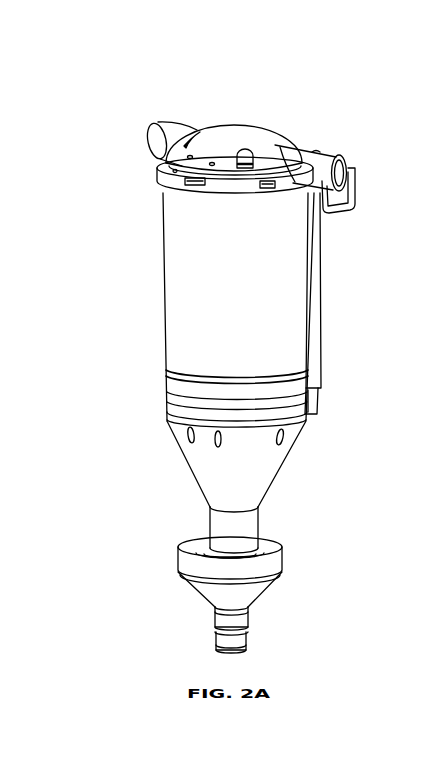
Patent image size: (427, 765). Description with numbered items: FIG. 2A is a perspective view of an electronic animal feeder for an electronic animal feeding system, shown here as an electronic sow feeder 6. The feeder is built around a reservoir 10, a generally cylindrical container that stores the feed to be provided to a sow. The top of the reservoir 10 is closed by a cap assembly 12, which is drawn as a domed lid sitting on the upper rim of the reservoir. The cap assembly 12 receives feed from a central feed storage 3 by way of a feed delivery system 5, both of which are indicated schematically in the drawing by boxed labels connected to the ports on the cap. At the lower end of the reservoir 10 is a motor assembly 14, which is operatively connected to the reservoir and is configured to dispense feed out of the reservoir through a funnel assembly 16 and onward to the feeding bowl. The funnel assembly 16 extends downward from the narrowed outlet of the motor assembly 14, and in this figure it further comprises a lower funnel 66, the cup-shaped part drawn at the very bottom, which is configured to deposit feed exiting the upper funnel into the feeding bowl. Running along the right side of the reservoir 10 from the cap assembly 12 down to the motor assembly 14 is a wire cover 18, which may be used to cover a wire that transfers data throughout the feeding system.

The electronic sow feeder 6 is at (101, 148).
The feed delivery system 5 is at (152, 127).
The central feed storage 3 is at (174, 88).
The cap assembly 12 is at (256, 136).
The reservoir 10 is at (168, 276).
The wire cover 18 is at (316, 304).
The motor assembly 14 is at (287, 402).
The funnel assembly 16 is at (257, 535).
The lower funnel 66 is at (211, 585).